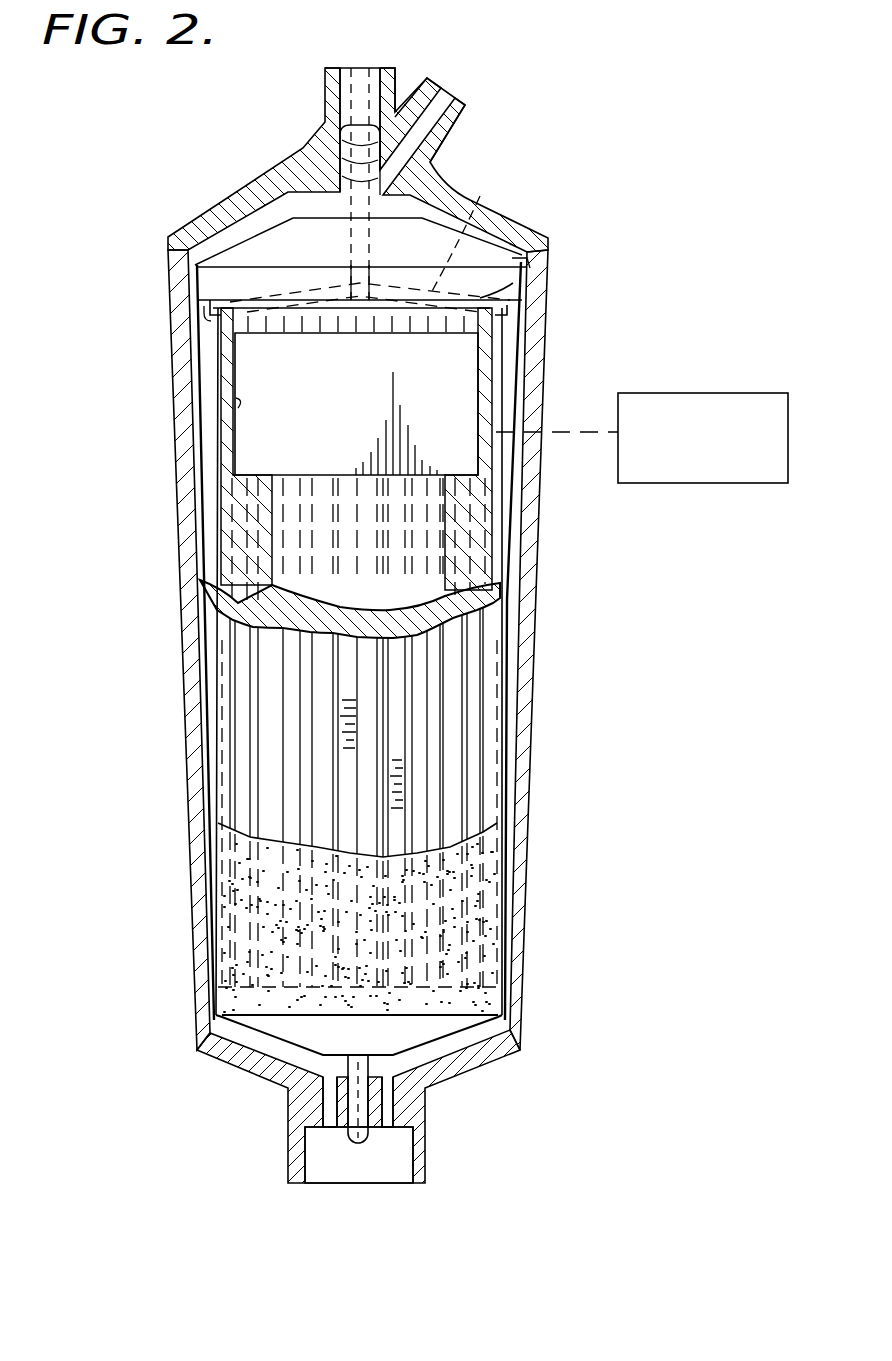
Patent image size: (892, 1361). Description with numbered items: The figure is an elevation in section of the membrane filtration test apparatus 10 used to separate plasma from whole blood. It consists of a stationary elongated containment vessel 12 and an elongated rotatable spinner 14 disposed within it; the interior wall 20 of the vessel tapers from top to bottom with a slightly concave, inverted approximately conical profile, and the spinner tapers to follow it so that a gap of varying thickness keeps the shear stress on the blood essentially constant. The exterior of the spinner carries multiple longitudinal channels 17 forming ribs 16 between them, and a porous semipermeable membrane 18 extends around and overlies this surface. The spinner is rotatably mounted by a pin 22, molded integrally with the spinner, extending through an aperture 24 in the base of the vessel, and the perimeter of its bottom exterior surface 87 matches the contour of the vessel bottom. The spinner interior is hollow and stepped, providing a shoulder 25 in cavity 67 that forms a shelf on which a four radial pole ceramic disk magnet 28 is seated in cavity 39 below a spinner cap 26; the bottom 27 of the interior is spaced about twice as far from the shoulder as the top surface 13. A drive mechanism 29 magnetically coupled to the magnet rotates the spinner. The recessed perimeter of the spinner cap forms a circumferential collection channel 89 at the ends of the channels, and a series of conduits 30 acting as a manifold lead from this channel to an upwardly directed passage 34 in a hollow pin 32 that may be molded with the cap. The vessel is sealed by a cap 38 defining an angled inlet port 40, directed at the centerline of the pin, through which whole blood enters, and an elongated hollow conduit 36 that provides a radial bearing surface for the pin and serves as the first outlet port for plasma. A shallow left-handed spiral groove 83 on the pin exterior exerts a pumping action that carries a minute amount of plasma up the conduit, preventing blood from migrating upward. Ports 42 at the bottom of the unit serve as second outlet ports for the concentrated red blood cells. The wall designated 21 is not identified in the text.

The membrane filtration apparatus 10 is at (608, 205).
The containment vessel 12 is at (549, 349).
The top surface 13 is at (500, 290).
The spinner 14 is at (512, 618).
The ribs 16 is at (290, 732).
The longitudinal channels 17 is at (250, 546).
The porous semipermeable membrane 18 is at (192, 278).
The interior wall 20 is at (503, 738).
The inner vessel wall 21 is at (514, 705).
The pin 22 is at (360, 1097).
The aperture 24 is at (357, 1128).
The shoulder 25 is at (236, 462).
The spinner cap 26 is at (500, 228).
The bottom 27 is at (250, 990).
The ceramic disk magnet 28 is at (356, 395).
The drive mechanism 29 is at (775, 393).
The conduits 30 is at (486, 190).
The hollow pin 32 is at (333, 205).
The passage 34 is at (398, 115).
The hollow conduit 36 is at (368, 76).
The cap 38 is at (236, 190).
The cavity 39 is at (525, 262).
The inlet port 40 is at (464, 108).
The ports 42 is at (323, 1102).
The cavity 67 is at (236, 398).
The spiral groove 83 is at (382, 158).
The perimeter of the bottom exterior surface 87 is at (508, 1027).
The circumferential collection channel 89 is at (205, 322).